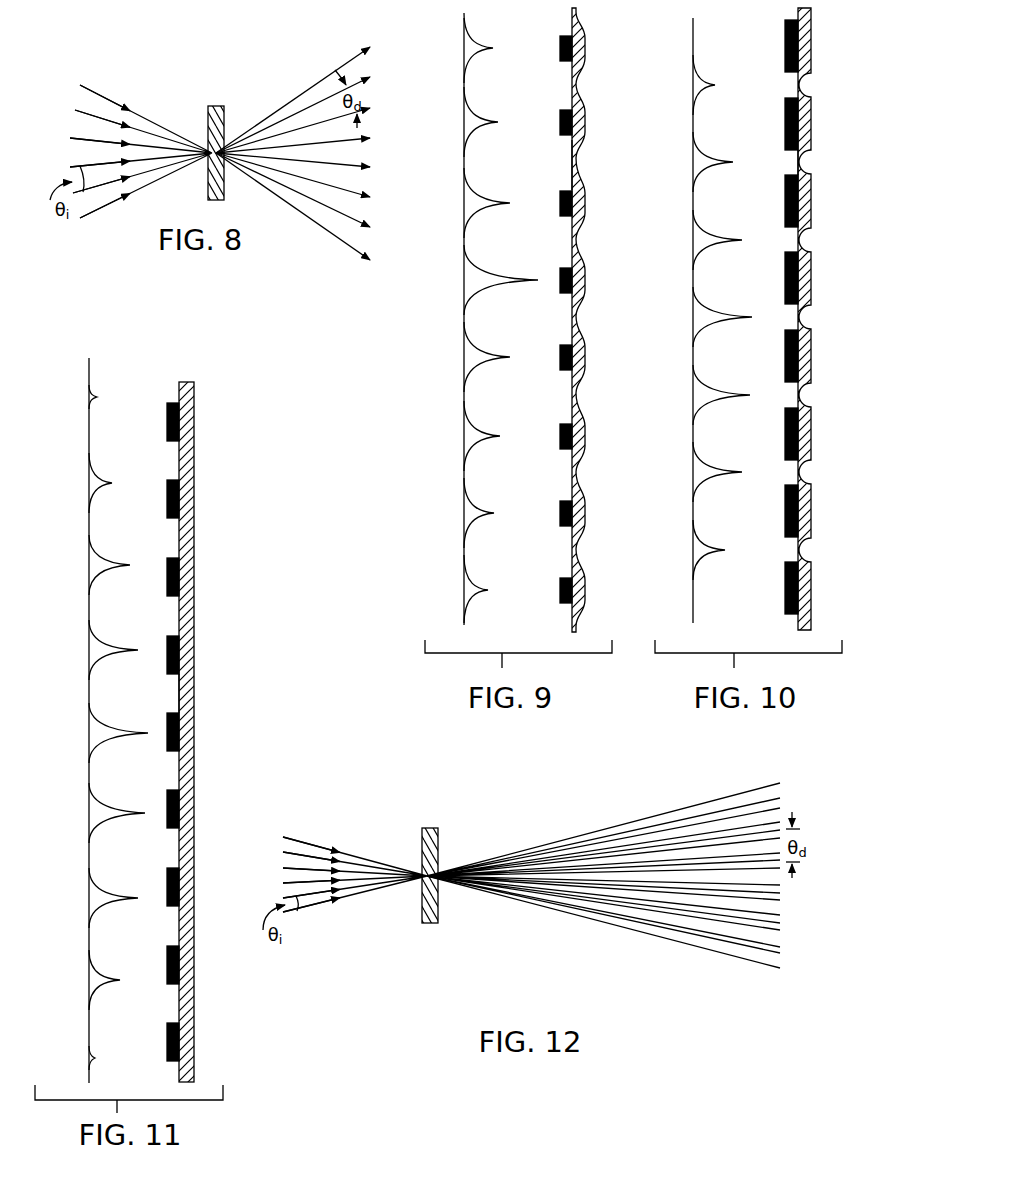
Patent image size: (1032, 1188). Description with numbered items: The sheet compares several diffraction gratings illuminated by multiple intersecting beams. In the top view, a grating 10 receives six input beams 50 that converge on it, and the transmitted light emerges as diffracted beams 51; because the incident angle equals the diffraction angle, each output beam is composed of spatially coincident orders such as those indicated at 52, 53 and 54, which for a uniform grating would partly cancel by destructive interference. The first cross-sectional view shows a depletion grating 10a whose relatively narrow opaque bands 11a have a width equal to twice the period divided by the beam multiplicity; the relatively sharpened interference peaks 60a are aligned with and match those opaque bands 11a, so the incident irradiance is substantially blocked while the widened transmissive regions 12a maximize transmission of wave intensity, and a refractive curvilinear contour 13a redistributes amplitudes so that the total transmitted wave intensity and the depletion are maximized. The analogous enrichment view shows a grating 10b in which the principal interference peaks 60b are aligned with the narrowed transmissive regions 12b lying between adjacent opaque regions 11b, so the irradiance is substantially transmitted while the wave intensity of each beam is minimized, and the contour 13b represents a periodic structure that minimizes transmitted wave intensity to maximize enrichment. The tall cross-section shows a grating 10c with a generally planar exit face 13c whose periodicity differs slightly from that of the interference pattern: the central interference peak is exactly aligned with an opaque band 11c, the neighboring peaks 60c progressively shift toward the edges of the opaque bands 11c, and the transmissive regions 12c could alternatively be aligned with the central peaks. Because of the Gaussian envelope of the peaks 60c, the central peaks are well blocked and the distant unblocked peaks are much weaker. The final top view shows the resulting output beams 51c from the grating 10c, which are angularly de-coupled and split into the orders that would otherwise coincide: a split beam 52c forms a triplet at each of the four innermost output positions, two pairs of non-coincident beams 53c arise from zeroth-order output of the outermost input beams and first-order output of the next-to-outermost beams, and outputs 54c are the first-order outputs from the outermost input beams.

In FIG. 8, the grating 10 is at (218, 108).
In FIG. 8, the input beams 50 is at (125, 90).
In FIG. 12, the input beams 50 is at (323, 836).
In FIG. 8, the diffracted beams 51 is at (307, 75).
In FIG. 8, the coincident order 52 is at (350, 163).
In FIG. 8, the coincident order 53 is at (352, 218).
In FIG. 8, the coincident order 54 is at (360, 252).
In FIG. 9, the grating 10a is at (581, 319).
In FIG. 9, the opaque bands 11a is at (560, 42).
In FIG. 9, the transmissive regions 12a is at (572, 163).
In FIG. 9, the periodic structure contour 13a is at (574, 88).
In FIG. 9, the interference peaks 60a is at (479, 93).
In FIG. 10, the grating 10b is at (808, 317).
In FIG. 10, the opaque regions 11b is at (785, 36).
In FIG. 10, the transmissive regions 12b is at (797, 162).
In FIG. 10, the periodic structure contour 13b is at (800, 80).
In FIG. 10, the principal interference peaks 60b is at (703, 70).
In FIG. 11, the grating 10c is at (235, 716).
In FIG. 12, the grating 10c is at (432, 828).
In FIG. 11, the opaque bands 11c is at (168, 424).
In FIG. 11, the transmissive regions 12c is at (178, 700).
In FIG. 11, the exit face 13c is at (195, 535).
In FIG. 11, the interference peaks 60c is at (107, 375).
In FIG. 12, the output beams 51c is at (727, 787).
In FIG. 12, the split beam 52c is at (787, 893).
In FIG. 12, the pair of non-coincident beams 53c is at (787, 949).
In FIG. 12, the first-order output 54c is at (792, 975).